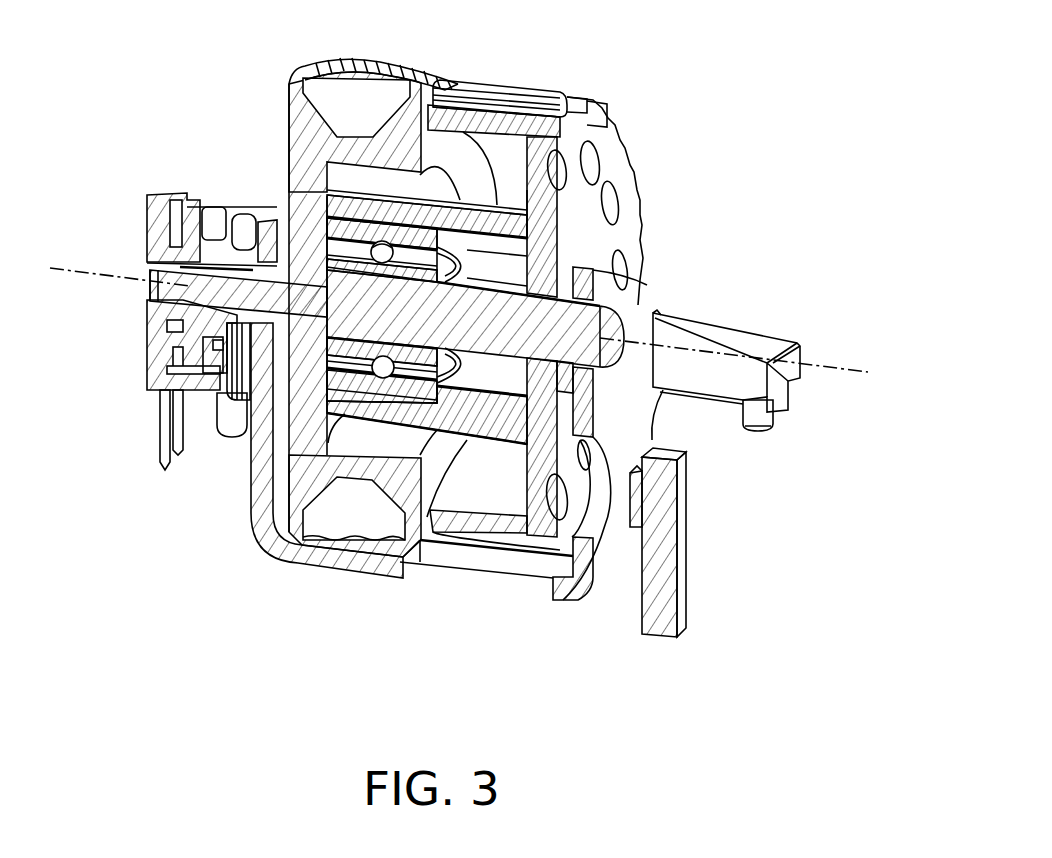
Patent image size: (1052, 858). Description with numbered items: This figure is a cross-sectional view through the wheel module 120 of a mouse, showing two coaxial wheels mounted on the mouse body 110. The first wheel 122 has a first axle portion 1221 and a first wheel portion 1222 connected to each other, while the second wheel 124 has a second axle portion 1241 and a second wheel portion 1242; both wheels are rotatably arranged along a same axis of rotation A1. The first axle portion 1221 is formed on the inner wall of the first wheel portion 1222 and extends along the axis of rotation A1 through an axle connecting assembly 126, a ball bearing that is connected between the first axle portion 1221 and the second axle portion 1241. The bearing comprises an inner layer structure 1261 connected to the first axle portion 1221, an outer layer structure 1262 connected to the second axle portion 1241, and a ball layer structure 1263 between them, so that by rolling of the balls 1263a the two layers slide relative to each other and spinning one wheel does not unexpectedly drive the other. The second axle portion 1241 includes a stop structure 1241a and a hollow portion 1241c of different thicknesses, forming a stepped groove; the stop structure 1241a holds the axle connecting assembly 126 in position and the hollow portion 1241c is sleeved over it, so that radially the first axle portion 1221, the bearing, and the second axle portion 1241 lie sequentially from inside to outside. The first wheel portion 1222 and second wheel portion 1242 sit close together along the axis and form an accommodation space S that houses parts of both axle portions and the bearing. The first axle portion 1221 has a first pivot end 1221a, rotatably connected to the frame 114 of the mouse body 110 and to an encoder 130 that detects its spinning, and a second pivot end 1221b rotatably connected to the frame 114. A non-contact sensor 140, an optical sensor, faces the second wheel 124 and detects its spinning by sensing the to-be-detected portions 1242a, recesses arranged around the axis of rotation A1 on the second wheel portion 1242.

The wheel module 120 is at (607, 85).
The first wheel 122 is at (415, 184).
The first axle portion 1221 is at (473, 320).
The first pivot end 1221a is at (193, 292).
The second pivot end 1221b is at (597, 328).
The first wheel portion 1222 is at (360, 61).
The second wheel 124 is at (389, 301).
The second axle portion 1241 is at (400, 213).
The stop structure 1241a is at (453, 240).
The hollow portion 1241c is at (375, 392).
The second wheel portion 1242 is at (510, 177).
The to-be-detected portions 1242a is at (587, 170).
The axle connecting assembly 126 is at (70, 85).
The inner layer structure 1261 is at (363, 267).
The outer layer structure 1262 is at (337, 227).
The ball layer structure 1263 is at (380, 253).
The balls 1263a is at (353, 247).
The encoder 130 is at (190, 232).
The accommodation space S is at (505, 160).
The axis of rotation A1 is at (840, 367).
The mouse body 110 is at (725, 394).
The frame 114 is at (637, 423).
The non-contact sensor 140 is at (637, 510).